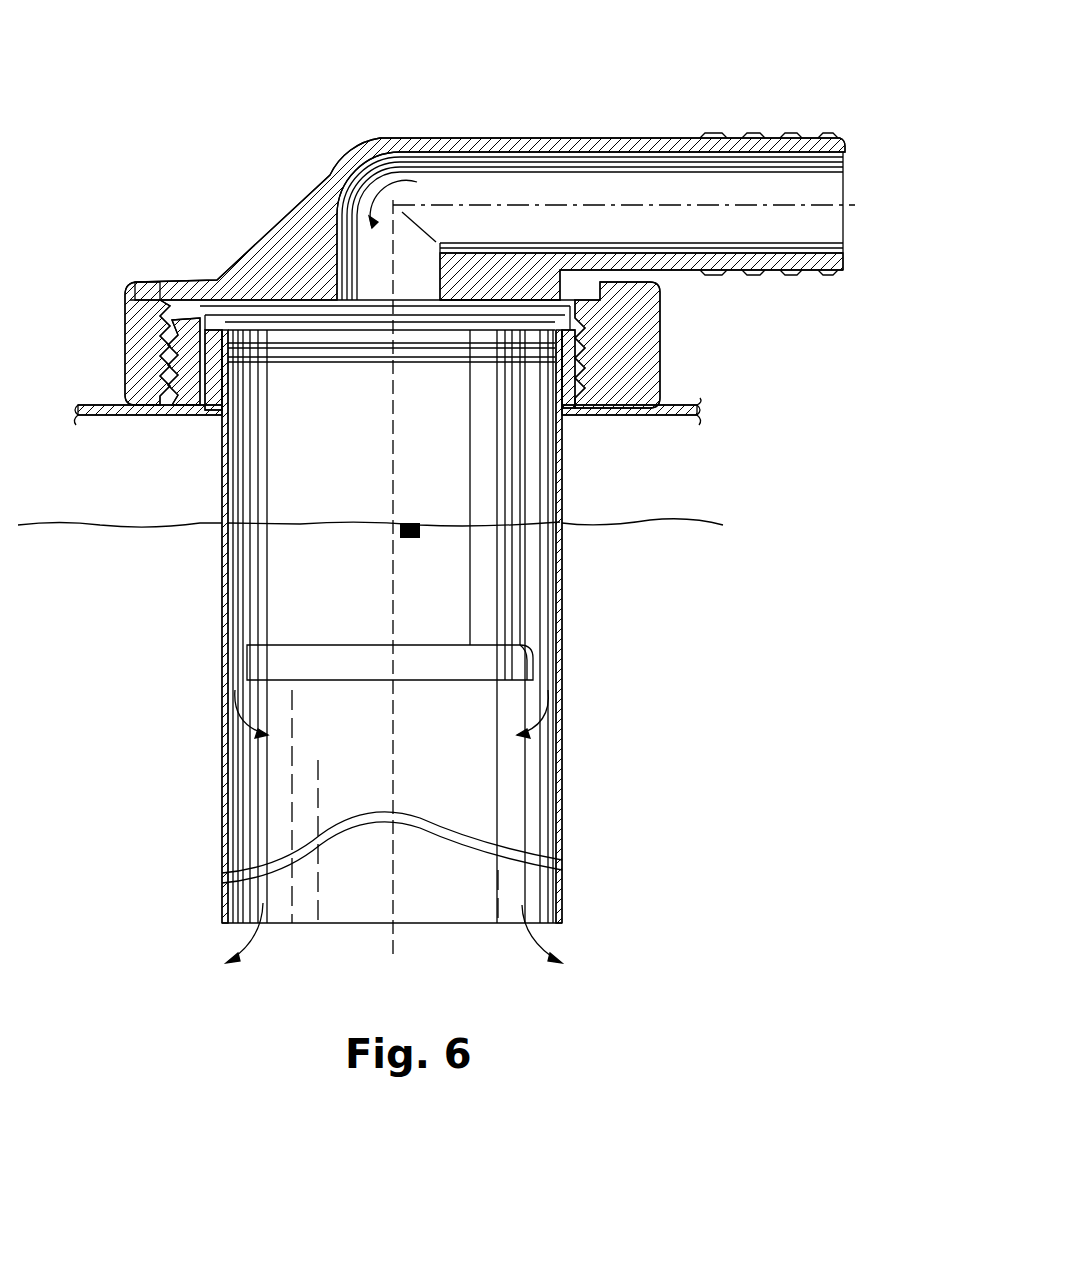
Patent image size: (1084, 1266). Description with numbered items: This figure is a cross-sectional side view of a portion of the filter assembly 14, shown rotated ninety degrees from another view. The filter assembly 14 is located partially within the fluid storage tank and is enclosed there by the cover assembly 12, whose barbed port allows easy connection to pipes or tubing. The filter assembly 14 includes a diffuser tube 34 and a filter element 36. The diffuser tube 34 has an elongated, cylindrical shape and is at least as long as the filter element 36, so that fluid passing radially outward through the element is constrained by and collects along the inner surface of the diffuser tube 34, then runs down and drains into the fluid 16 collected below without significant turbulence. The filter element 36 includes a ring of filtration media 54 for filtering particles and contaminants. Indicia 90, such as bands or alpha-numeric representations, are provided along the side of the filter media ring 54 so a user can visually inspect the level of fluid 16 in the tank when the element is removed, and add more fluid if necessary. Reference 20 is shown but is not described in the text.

The cover assembly 12 is at (686, 90).
The filter assembly 14 is at (146, 746).
The fluid 16 is at (699, 689).
The reservoir wall 20 is at (690, 403).
The diffuser tube 34 is at (558, 680).
The filter element 36 is at (550, 615).
The filter media ring 54 is at (545, 432).
The indicia 90 is at (426, 466).